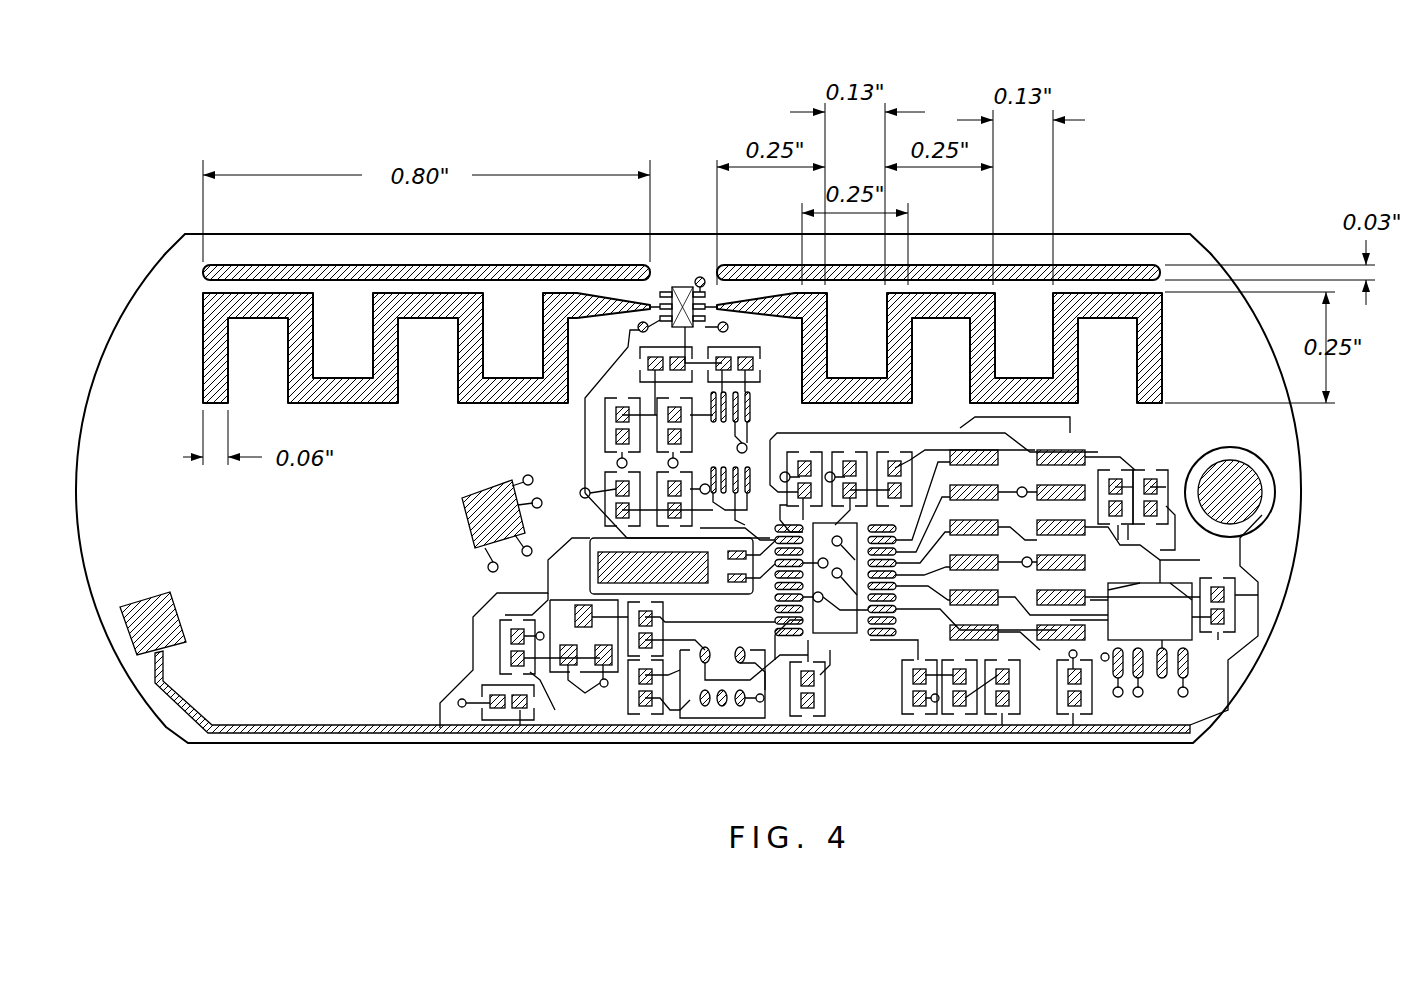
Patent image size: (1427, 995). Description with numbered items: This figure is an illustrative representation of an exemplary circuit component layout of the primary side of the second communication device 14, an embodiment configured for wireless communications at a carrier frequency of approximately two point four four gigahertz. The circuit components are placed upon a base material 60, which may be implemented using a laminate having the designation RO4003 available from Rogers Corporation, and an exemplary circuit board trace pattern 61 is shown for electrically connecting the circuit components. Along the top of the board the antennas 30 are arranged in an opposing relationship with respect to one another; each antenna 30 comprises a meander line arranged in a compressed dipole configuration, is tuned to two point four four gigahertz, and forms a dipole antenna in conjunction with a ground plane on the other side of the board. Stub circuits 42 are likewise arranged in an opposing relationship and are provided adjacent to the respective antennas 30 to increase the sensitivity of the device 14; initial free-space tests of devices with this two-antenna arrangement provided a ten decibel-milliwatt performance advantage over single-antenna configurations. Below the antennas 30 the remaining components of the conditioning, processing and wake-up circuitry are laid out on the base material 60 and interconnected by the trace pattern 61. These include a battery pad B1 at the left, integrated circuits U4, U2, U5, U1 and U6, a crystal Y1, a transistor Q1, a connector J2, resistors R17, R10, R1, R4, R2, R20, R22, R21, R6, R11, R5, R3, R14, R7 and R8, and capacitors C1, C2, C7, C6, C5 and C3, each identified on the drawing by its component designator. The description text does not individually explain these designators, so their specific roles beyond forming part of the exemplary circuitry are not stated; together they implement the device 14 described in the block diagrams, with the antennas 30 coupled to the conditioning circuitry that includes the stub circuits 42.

The second communication device 14 is at (104, 293).
The antennas 30 is at (203, 360).
The stub circuits 42 is at (336, 265).
The base material 60 is at (300, 589).
The circuit board trace pattern 61 is at (1275, 446).
The battery pad B1 is at (153, 604).
The integrated circuit U4 is at (656, 373).
The resistor R17 is at (748, 355).
The resistor R10 is at (634, 378).
The integrated circuit U2 is at (746, 457).
The resistor R1 is at (612, 433).
The capacitor C1 is at (690, 433).
The resistor R4 is at (668, 501).
The capacitor C2 is at (673, 501).
The crystal Y1 is at (667, 566).
The integrated circuit U5 is at (878, 566).
The resistor R2 is at (934, 466).
The capacitor C7 is at (846, 468).
The resistor R20 is at (942, 459).
The connector J2 is at (1070, 531).
The resistor R22 is at (1109, 484).
The resistor R21 is at (1151, 497).
The resistor R6 is at (1225, 599).
The integrated circuit U6 is at (1131, 641).
The capacitor C6 is at (520, 665).
The transistor Q1 is at (589, 649).
The resistor R11 is at (701, 624).
The resistor R5 is at (659, 717).
The capacitor C5 is at (513, 707).
The integrated circuit U1 is at (744, 710).
The resistor R3 is at (810, 707).
The resistor R14 is at (911, 707).
The resistor R7 is at (970, 717).
The resistor R8 is at (1004, 717).
The capacitor C3 is at (1074, 712).